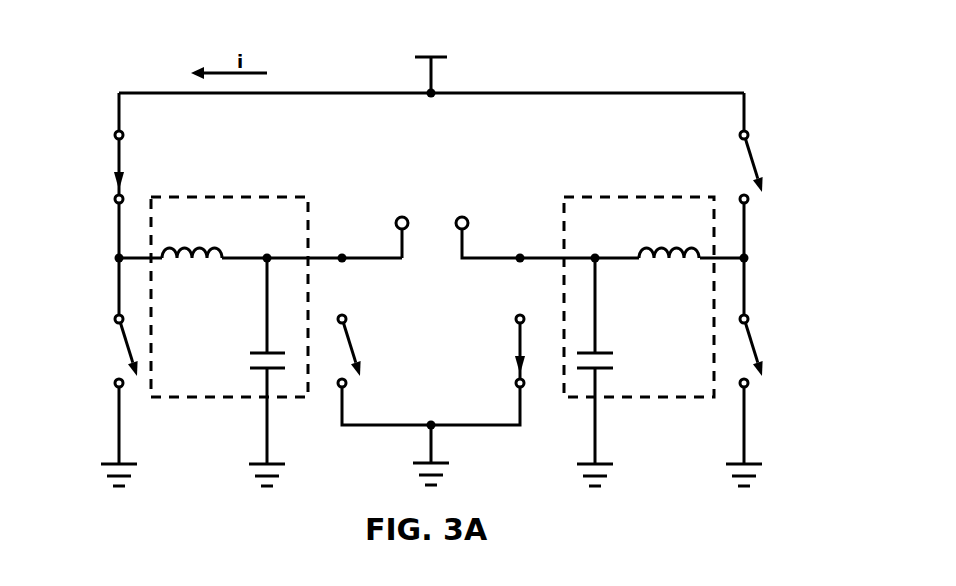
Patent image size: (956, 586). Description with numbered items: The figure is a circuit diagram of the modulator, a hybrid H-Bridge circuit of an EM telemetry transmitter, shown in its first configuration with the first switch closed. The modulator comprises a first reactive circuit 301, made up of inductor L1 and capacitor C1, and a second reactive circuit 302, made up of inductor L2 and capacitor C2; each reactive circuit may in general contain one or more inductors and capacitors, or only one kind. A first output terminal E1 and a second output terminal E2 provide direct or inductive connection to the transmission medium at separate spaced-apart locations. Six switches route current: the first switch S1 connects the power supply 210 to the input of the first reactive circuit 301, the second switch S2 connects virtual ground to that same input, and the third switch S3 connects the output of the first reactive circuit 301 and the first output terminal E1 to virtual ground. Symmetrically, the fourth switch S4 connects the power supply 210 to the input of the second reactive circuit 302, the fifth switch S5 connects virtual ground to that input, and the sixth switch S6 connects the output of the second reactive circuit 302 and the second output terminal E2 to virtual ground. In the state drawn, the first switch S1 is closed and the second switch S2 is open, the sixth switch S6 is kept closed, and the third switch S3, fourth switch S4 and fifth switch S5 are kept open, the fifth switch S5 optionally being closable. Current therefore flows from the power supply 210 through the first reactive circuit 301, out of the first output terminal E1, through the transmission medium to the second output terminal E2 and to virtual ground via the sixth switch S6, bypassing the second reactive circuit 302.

The power supply 210 is at (431, 56).
The first reactive circuit 301 is at (229, 282).
The second reactive circuit 302 is at (639, 282).
The inductor L1 is at (192, 233).
The inductor L2 is at (669, 233).
The capacitor C1 is at (260, 361).
The capacitor C2 is at (605, 361).
The first switch S1 is at (105, 167).
The second switch S2 is at (112, 351).
The third switch S3 is at (366, 351).
The fourth switch S4 is at (768, 167).
The fifth switch S5 is at (768, 351).
The sixth switch S6 is at (506, 351).
The first output terminal E1 is at (387, 221).
The second output terminal E2 is at (477, 221).